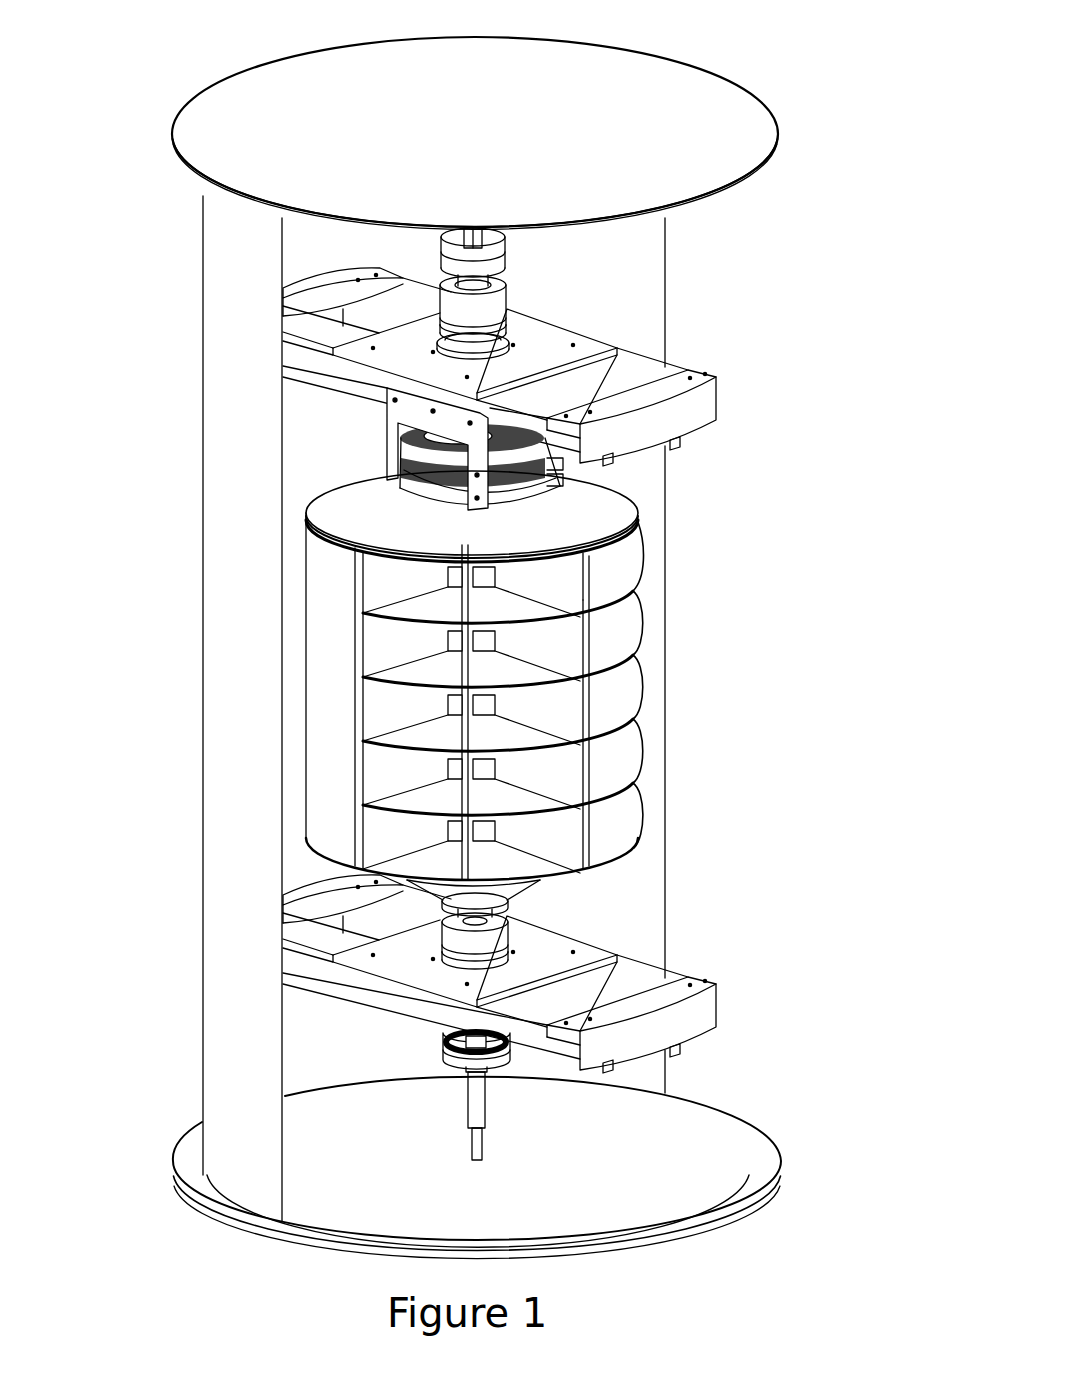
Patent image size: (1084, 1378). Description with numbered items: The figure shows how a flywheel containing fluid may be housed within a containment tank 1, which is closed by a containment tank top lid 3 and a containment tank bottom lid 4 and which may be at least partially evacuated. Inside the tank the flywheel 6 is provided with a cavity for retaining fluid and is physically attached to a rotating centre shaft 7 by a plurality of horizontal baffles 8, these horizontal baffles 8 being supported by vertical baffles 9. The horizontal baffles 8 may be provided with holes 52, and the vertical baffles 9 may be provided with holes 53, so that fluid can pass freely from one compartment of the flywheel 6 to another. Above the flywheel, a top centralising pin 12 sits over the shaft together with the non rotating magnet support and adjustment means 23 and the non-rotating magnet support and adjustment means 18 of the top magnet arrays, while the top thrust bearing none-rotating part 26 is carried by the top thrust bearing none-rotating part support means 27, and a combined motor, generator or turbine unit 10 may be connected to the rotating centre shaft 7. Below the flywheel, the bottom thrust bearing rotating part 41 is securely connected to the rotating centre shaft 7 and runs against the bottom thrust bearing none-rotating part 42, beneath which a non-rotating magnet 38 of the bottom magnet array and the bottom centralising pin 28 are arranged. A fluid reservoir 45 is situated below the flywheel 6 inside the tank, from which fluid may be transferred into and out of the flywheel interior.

The containment tank top lid 3 is at (630, 92).
The containment tank 1 is at (247, 388).
The containment tank bottom lid 4 is at (678, 1170).
The non rotating magnet support and adjustment means 23 is at (452, 263).
The top centralising pin 12 is at (505, 242).
The non-rotating magnet support and adjustment means 18 is at (487, 303).
The top thrust bearing none-rotating part 26 is at (513, 347).
The top thrust bearing none-rotating part support means 27 is at (413, 343).
The combined motor/generator/turbine 10 is at (395, 452).
The flywheel 6 is at (343, 598).
The rotating centre shaft 7 is at (510, 628).
The flywheel horizontal baffles 8 is at (392, 664).
The flywheel vertical baffles 9 is at (595, 657).
The holes in vertical baffle 53 is at (640, 685).
The holes in horizontal baffle 52 is at (583, 740).
The fluid reservoir inside tank 45 is at (400, 878).
The bottom thrust bearing rotating part 41 is at (505, 905).
The bottom thrust bearing none-rotating part 42 is at (522, 945).
The non-rotating magnet 38 is at (450, 1050).
The bottom centralising pin 28 is at (468, 1108).